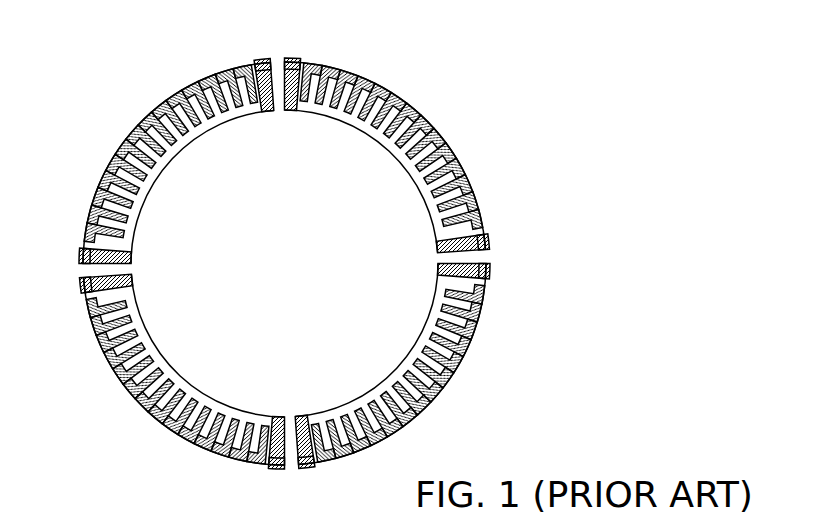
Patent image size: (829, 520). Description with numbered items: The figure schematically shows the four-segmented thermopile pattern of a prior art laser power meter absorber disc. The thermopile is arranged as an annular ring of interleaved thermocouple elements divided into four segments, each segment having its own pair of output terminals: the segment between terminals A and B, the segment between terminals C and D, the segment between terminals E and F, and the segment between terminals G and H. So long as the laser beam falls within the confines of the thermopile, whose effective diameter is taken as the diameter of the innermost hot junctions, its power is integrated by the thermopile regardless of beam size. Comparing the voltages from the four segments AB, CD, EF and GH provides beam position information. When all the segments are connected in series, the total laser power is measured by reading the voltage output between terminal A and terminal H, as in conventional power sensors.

The output terminal A is at (307, 468).
The output terminal B is at (490, 271).
The output terminal C is at (489, 241).
The output terminal D is at (293, 58).
The output terminal E is at (263, 59).
The output terminal F is at (79, 257).
The output terminal G is at (80, 288).
The output terminal H is at (277, 469).